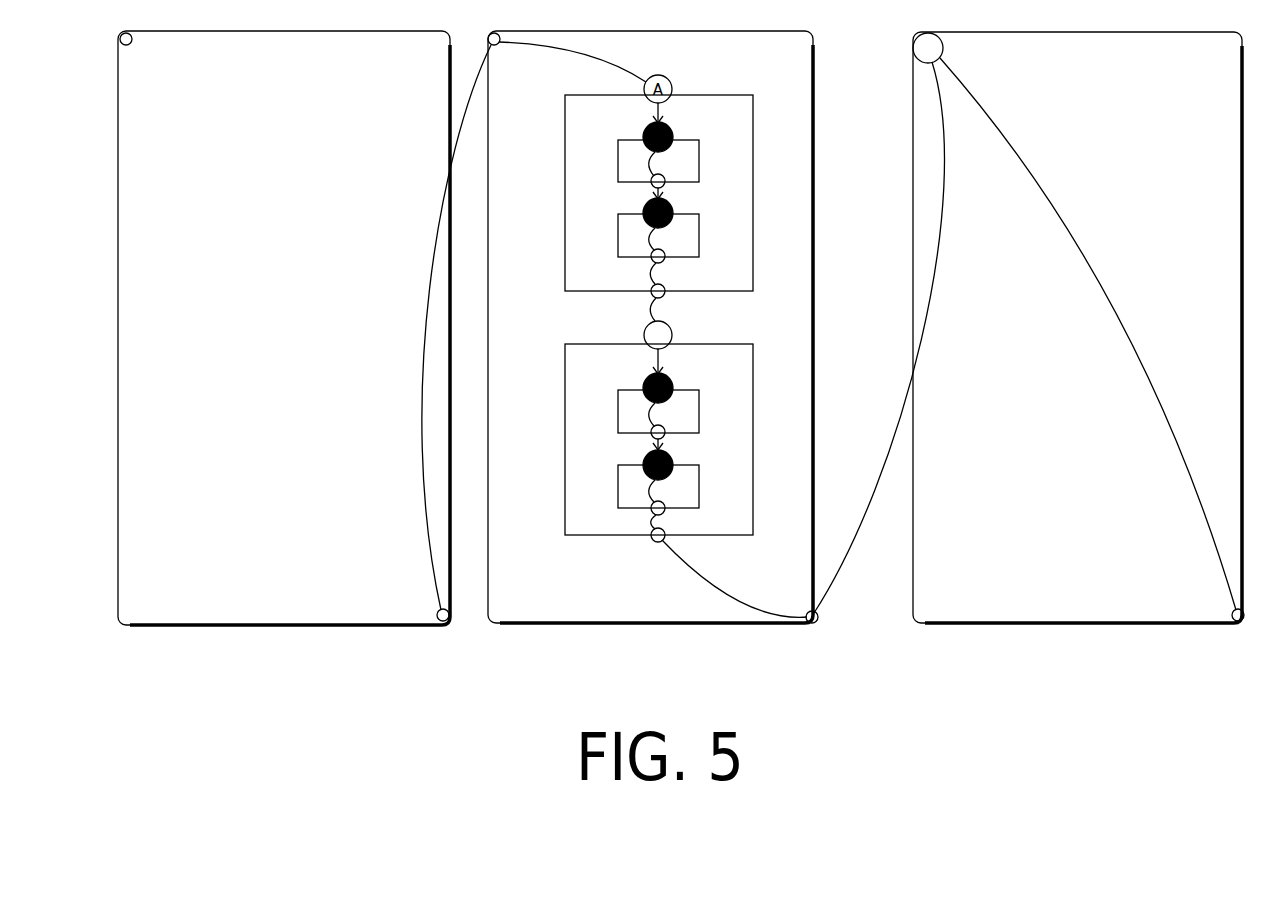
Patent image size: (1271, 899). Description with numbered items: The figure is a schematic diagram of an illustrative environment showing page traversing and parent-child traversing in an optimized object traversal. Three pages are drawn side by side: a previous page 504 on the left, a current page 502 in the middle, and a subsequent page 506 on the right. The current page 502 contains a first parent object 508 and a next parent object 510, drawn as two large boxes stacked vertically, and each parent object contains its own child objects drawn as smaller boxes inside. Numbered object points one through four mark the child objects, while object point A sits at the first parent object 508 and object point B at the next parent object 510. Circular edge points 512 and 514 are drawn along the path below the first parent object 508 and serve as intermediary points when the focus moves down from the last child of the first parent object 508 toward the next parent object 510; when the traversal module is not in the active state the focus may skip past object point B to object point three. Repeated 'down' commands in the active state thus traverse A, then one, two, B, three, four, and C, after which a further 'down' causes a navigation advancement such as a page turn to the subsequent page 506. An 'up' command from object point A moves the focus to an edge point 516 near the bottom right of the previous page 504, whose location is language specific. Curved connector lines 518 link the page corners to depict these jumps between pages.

The current page 502 is at (730, 626).
The previous page 504 is at (358, 626).
The subsequent page 506 is at (1150, 626).
The first parent object 508 is at (753, 97).
The next parent object 510 is at (753, 344).
The edge point 512 is at (665, 256).
The edge point 514 is at (665, 290).
The edge point 516 is at (672, 331).
The page link 518 is at (445, 621).